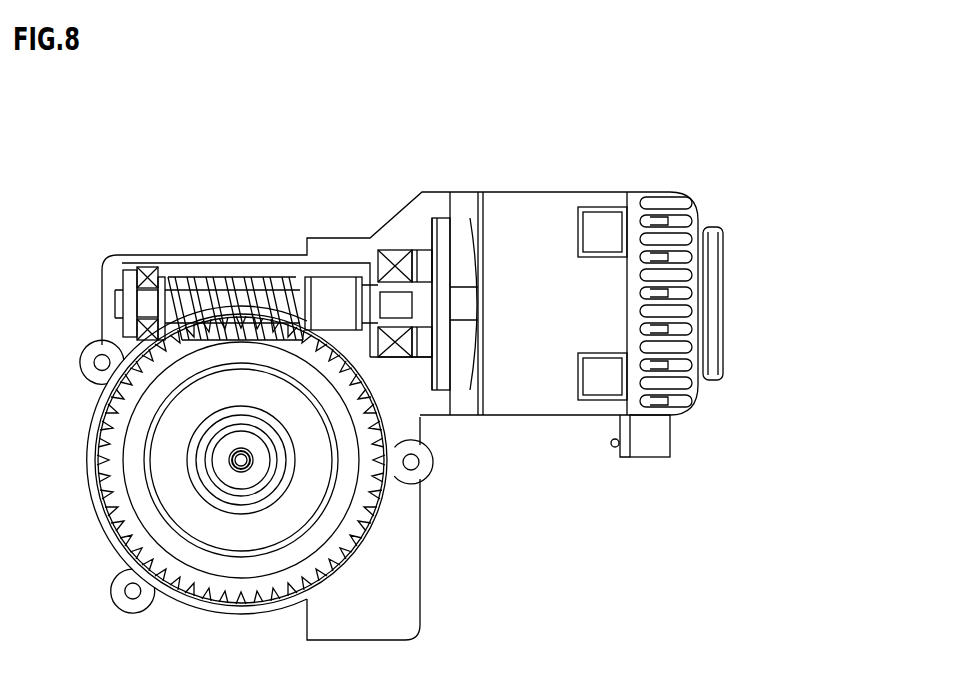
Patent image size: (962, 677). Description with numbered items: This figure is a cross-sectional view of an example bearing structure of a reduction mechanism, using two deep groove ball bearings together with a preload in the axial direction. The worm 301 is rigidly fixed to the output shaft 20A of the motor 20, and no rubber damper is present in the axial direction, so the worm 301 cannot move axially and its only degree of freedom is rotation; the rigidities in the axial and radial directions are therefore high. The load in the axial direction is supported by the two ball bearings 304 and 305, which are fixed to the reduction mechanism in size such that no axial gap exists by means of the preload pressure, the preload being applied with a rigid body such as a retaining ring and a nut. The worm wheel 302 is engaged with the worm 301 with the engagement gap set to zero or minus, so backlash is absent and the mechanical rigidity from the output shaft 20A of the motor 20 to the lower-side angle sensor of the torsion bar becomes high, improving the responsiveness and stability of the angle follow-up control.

The motor 20 is at (596, 190).
The output shaft 20A is at (378, 335).
The worm 301 is at (240, 280).
The worm wheel 302 is at (102, 424).
The ball bearing 304 is at (352, 332).
The ball bearing 305 is at (148, 268).